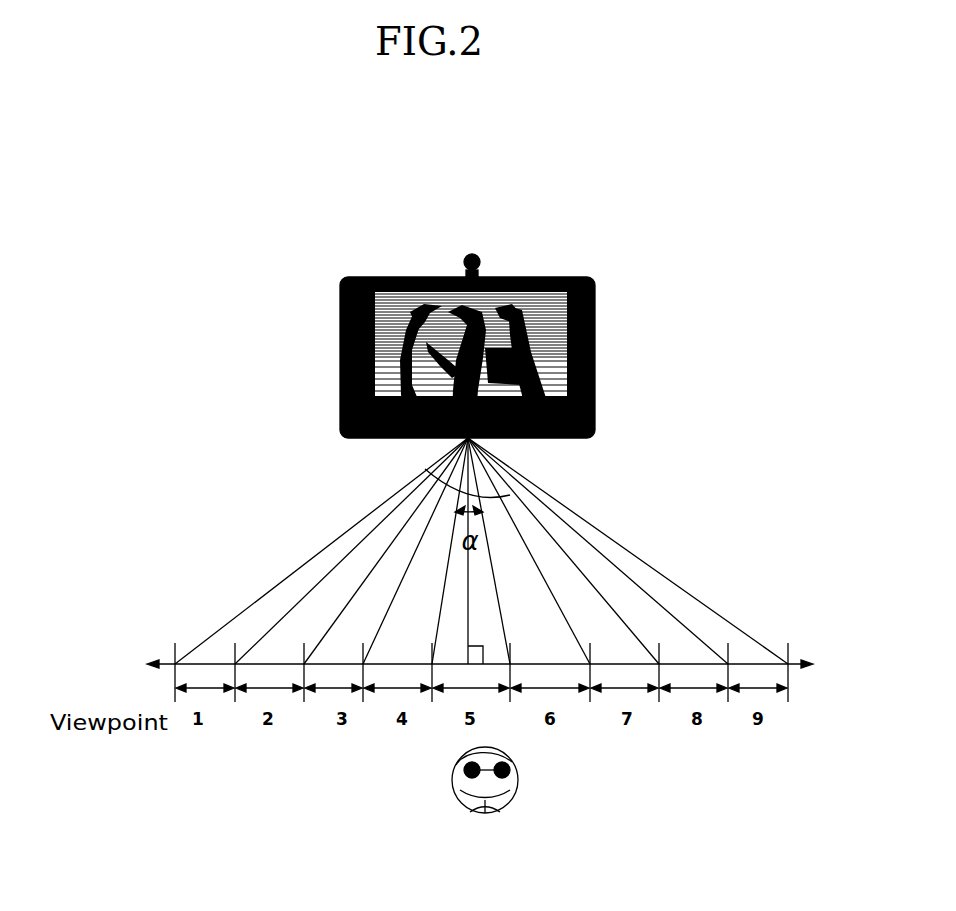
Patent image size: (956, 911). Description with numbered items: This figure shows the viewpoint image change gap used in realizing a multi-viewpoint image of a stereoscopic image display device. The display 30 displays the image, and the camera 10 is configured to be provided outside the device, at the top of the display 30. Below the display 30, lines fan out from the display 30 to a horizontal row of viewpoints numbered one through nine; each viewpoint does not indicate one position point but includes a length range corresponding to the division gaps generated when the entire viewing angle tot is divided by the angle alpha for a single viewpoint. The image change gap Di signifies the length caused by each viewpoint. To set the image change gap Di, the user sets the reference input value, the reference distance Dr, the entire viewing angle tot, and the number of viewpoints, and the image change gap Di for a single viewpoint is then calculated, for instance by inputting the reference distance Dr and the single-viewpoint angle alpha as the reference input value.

The camera 10 is at (473, 256).
The display 30 is at (595, 347).
The reference distance Dr is at (470, 583).
The image change gap Di is at (558, 690).
The entire viewing angle tot is at (510, 495).